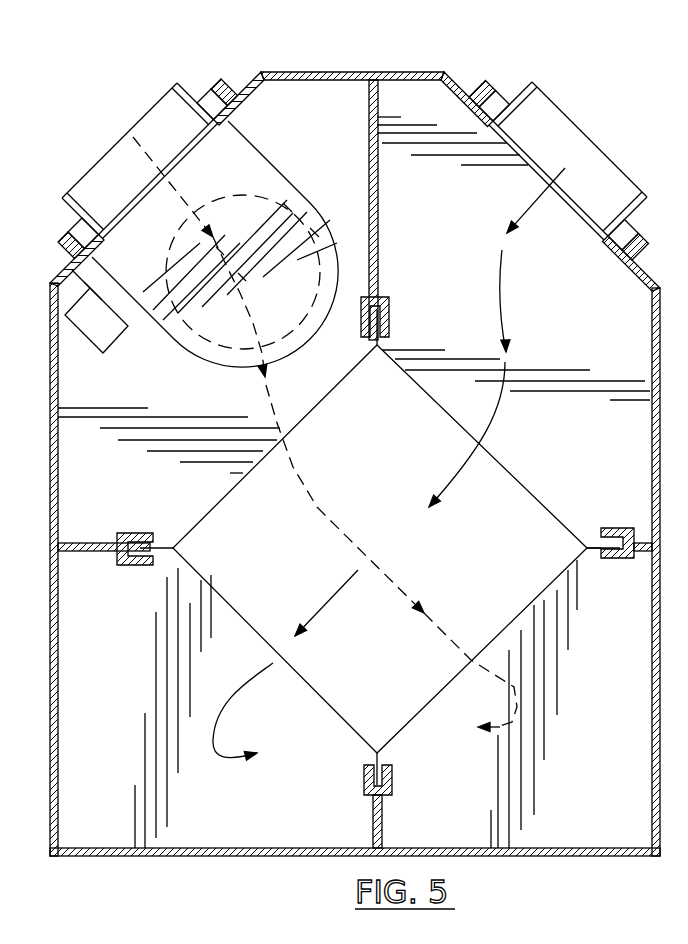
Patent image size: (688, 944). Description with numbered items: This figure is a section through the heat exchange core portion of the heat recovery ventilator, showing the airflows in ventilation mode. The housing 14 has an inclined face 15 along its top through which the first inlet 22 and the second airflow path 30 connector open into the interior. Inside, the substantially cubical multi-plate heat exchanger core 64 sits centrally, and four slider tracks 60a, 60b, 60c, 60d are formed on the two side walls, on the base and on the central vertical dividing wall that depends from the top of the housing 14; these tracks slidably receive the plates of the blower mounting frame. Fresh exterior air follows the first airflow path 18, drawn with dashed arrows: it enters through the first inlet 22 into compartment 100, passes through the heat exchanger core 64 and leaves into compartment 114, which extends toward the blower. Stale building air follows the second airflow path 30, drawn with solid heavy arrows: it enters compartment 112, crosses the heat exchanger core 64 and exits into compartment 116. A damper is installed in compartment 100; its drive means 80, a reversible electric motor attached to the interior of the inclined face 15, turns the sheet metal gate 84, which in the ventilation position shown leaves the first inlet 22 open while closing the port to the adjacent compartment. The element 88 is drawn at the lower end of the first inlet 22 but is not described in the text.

The housing 14 is at (405, 73).
The inclined face 15 is at (250, 80).
The first airflow path 18 is at (128, 127).
The first inlet 22 is at (107, 167).
The second airflow path 30 is at (607, 130).
The gate 84 is at (270, 180).
The inlet duct flange 88 is at (117, 255).
The drive means 80 is at (88, 322).
The compartment 112 is at (457, 285).
The compartment 100 is at (147, 508).
The compartment 116 is at (123, 665).
The compartment 114 is at (621, 657).
The heat exchanger core 64 is at (387, 415).
The slider track 60a is at (125, 540).
The slider track 60b is at (617, 543).
The slider track 60c is at (392, 780).
The slider track 60d is at (390, 312).